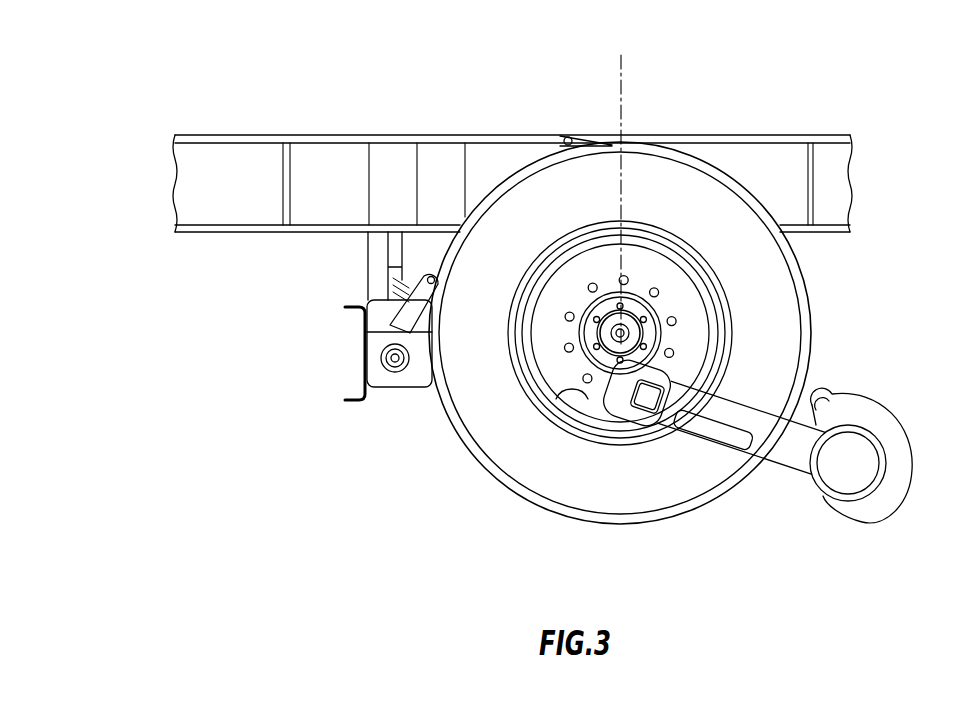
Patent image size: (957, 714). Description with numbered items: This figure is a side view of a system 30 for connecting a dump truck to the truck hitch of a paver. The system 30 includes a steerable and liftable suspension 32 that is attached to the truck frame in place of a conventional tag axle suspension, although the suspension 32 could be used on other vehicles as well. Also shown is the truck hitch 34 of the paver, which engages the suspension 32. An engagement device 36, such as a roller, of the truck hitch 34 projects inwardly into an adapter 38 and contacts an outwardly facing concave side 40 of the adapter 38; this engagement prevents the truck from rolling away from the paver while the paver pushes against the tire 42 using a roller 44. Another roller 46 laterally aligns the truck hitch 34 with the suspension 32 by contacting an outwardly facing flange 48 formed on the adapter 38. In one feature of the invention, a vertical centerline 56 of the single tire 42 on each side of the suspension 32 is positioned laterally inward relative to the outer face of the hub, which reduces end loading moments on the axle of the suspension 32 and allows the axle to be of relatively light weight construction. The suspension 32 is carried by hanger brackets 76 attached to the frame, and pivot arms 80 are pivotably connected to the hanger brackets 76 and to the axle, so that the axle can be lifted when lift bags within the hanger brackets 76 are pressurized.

The system 30 is at (273, 69).
The suspension 32 is at (427, 423).
The truck hitch 34 is at (806, 492).
The engagement device 36 is at (606, 405).
The adapter 38 is at (734, 297).
The outwardly facing concave side 40 is at (573, 397).
The tire 42 is at (802, 259).
The roller 44 is at (821, 393).
The roller 46 is at (731, 388).
The outwardly facing flange 48 is at (602, 256).
The vertical centerline 56 is at (624, 70).
The hanger brackets 76 is at (362, 266).
The pivot arms 80 is at (420, 392).